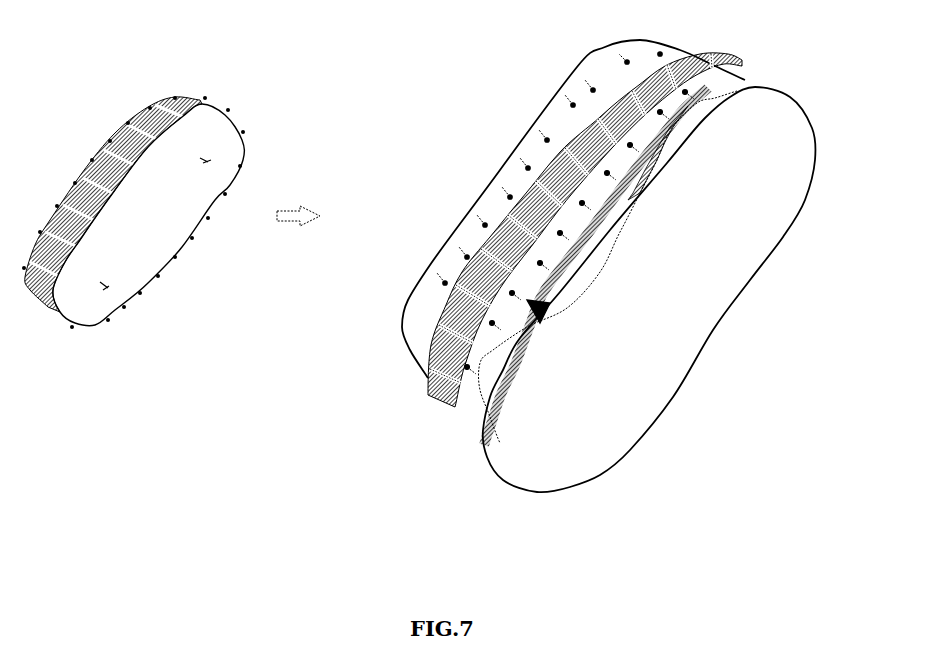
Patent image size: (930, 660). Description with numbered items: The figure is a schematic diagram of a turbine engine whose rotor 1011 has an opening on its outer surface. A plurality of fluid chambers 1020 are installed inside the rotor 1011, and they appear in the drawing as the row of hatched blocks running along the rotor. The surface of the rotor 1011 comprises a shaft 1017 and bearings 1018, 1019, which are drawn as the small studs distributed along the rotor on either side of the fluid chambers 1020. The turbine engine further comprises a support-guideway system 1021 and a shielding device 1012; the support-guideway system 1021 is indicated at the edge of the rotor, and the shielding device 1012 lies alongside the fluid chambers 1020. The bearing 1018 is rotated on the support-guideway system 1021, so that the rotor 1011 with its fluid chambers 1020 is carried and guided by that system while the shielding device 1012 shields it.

The rotor 1011 is at (747, 83).
The shielding device 1012 is at (613, 217).
The shaft 1017 is at (485, 225).
The bearing 1018 is at (516, 293).
The bearing 1019 is at (600, 248).
The fluid chambers 1020 is at (595, 105).
The support-guideway system 1021 is at (413, 360).